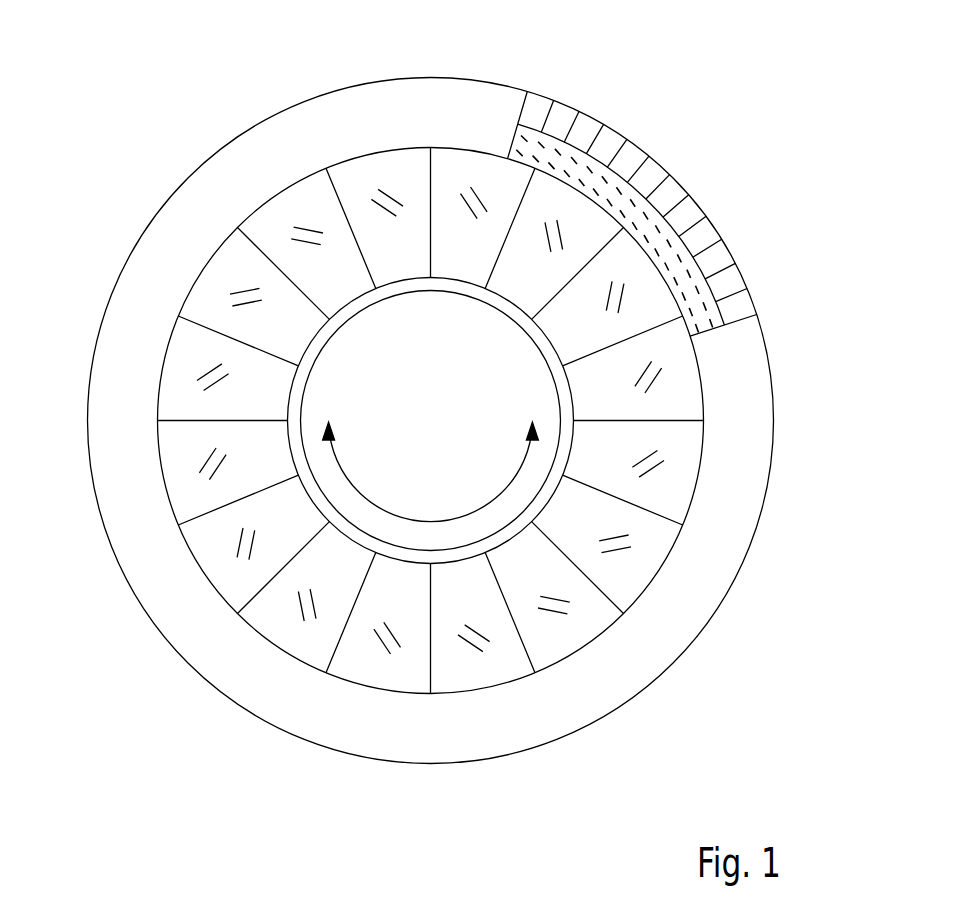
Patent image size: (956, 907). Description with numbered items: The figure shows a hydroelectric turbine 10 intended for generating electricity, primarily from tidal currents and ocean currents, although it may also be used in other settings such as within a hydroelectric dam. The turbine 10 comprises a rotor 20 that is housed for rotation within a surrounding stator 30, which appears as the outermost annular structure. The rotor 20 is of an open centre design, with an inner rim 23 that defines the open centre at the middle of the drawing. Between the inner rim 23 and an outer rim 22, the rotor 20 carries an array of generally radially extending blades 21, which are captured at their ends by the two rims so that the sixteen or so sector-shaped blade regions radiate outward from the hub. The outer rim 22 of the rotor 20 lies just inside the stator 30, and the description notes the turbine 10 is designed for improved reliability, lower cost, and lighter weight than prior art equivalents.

The hydroelectric turbine 10 is at (200, 108).
The rotor 20 is at (442, 295).
The blades 21 is at (202, 470).
The outer rim 22 is at (657, 235).
The inner rim 23 is at (562, 386).
The stator 30 is at (693, 640).